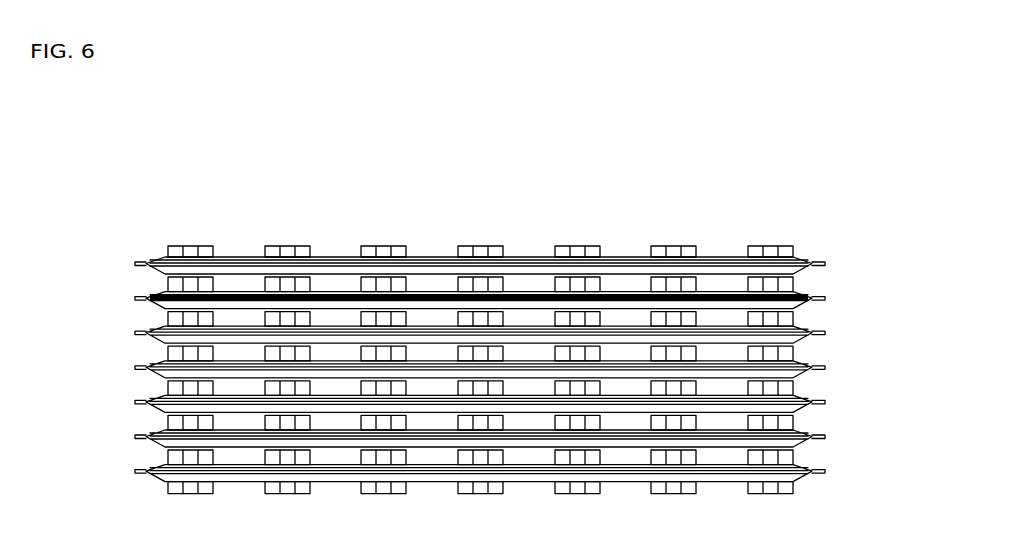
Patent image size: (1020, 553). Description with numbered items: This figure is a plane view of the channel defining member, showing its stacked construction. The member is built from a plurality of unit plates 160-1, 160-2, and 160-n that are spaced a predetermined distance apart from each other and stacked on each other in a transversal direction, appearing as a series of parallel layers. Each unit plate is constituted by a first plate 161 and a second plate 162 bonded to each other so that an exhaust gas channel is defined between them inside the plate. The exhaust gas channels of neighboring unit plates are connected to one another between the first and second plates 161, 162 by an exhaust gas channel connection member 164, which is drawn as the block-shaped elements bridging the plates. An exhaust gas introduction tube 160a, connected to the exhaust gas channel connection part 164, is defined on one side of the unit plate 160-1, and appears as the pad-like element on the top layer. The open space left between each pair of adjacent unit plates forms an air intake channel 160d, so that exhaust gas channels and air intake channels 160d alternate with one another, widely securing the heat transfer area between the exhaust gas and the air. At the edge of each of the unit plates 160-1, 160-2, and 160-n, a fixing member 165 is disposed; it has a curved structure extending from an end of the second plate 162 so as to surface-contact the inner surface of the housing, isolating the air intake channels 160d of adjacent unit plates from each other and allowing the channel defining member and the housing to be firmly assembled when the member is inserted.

The unit plate 160-1 is at (479, 227).
The unit plate 160-2 is at (826, 297).
The unit plate 160-n is at (820, 468).
The exhaust gas introduction tube 160a is at (285, 247).
The air intake channel 160d is at (418, 221).
The first plate 161 is at (158, 259).
The second plate 162 is at (152, 270).
The exhaust gas channel connection member 164 is at (148, 286).
The fixing member 165 is at (147, 371).